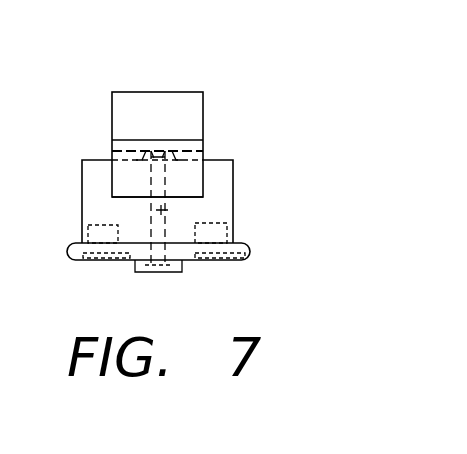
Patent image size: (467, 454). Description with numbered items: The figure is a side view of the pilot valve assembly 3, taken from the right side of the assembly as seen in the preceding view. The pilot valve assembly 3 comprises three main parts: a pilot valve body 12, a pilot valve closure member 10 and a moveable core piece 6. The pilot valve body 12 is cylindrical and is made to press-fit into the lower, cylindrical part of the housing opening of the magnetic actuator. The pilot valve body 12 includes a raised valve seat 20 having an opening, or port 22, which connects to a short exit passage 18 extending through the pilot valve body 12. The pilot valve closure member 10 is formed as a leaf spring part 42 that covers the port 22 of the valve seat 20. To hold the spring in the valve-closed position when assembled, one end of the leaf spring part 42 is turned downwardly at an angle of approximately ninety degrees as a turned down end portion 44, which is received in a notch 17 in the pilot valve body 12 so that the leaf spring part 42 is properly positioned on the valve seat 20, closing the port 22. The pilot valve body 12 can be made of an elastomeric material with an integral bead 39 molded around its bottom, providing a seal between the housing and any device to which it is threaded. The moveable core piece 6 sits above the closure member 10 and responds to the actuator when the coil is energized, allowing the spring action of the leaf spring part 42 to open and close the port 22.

The pilot valve assembly 3 is at (96, 267).
The moveable core piece 6 is at (177, 112).
The pilot valve closure member 10 is at (215, 151).
The pilot valve body 12 is at (230, 235).
The notch 17 is at (125, 195).
The exit passage 18 is at (160, 210).
The valve seat 20 is at (203, 141).
The port 22 is at (157, 153).
The integral bead 39 is at (75, 252).
The leaf spring part 42 is at (135, 150).
The turned down end portion 44 is at (185, 180).